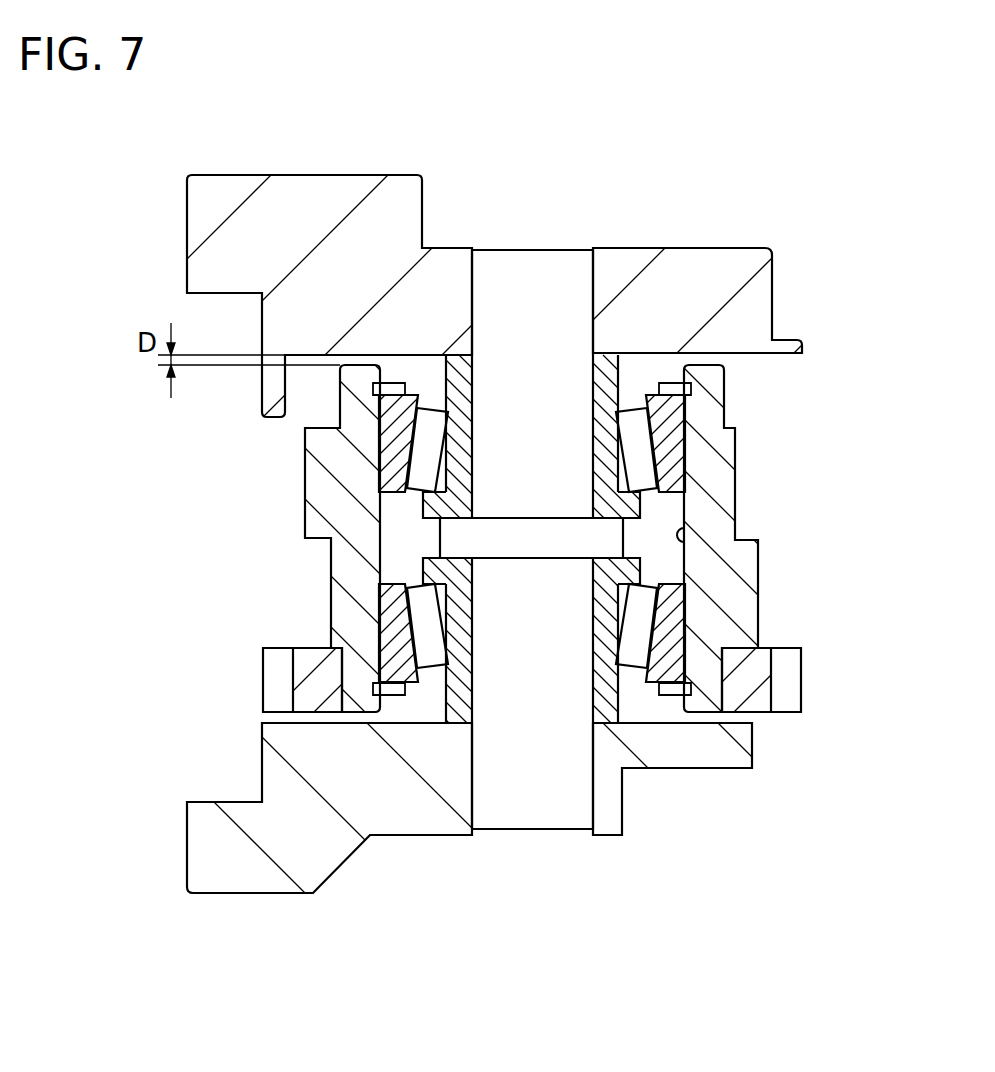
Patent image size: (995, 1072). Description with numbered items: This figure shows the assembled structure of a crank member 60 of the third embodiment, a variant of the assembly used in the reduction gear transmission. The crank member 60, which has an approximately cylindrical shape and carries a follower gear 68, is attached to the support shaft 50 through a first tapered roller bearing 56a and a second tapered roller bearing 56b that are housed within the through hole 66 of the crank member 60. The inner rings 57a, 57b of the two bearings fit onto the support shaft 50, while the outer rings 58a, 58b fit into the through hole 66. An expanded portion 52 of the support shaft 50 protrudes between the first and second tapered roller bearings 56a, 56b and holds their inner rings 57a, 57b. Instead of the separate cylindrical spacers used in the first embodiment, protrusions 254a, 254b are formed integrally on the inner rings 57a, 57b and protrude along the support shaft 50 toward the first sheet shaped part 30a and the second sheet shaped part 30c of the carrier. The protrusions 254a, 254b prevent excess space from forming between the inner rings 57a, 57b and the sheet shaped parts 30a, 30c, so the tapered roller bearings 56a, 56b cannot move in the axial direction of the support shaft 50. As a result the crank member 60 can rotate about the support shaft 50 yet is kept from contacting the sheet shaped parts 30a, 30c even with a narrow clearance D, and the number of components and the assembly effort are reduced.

The protrusion 254a is at (457, 372).
The protrusion 254b is at (458, 698).
The support shaft 50 is at (518, 270).
The expanded portion 52 is at (540, 537).
The first sheet shaped part 30a is at (720, 268).
The second sheet shaped part 30c is at (700, 750).
The outer ring 58a is at (398, 428).
The outer ring 58b is at (397, 652).
The first tapered roller bearing 56a is at (423, 462).
The second tapered roller bearing 56b is at (418, 603).
The inner ring 57a is at (443, 506).
The inner ring 57b is at (453, 628).
The through hole 66 is at (686, 542).
The crank member 60 is at (730, 570).
The follower gear 68 is at (755, 683).